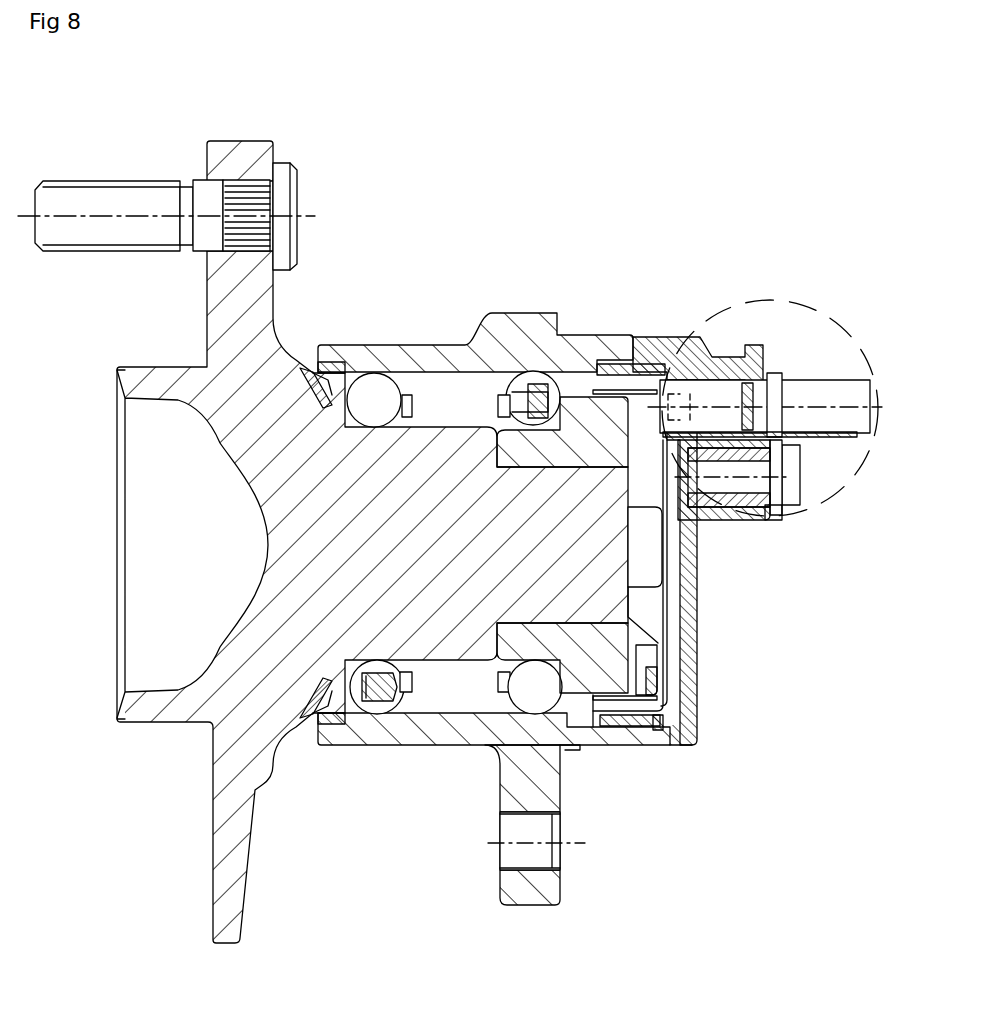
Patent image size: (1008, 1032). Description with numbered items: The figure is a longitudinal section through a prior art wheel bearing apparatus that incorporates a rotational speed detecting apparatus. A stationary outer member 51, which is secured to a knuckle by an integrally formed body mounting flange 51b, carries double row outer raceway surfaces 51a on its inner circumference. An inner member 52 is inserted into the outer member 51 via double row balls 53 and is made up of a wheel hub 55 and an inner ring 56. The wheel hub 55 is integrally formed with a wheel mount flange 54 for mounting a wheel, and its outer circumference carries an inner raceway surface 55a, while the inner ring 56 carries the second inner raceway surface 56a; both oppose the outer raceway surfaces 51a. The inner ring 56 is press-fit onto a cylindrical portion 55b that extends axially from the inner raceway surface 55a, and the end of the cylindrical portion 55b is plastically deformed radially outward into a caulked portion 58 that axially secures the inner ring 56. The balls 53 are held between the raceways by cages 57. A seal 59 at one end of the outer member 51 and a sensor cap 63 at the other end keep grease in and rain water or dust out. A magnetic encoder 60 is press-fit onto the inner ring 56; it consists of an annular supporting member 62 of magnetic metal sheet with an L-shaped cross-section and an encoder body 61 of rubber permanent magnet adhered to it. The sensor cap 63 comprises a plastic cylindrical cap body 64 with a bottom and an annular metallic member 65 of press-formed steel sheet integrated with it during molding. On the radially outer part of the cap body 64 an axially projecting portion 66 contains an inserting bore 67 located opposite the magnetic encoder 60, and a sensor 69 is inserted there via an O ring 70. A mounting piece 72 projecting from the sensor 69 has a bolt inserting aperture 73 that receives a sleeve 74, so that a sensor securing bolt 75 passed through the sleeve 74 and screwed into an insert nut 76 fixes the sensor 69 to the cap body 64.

The outer member 51 is at (457, 357).
The outer raceway surfaces 51a is at (378, 385).
The body mounting flange 51b is at (525, 893).
The inner member 52 is at (236, 467).
The double row balls 53 is at (527, 697).
The wheel mount flange 54 is at (243, 158).
The wheel hub 55 is at (238, 413).
The inner raceway surface 55a is at (367, 403).
The cylindrical portion 55b is at (577, 450).
The inner ring 56 is at (563, 657).
The inner raceway surface 56a is at (518, 410).
The cages 57 is at (395, 680).
The caulked portion 58 is at (675, 628).
The seal 59 is at (305, 716).
The magnetic encoder 60 is at (786, 680).
The encoder body 61 is at (660, 678).
The annular supporting member 62 is at (672, 717).
The sensor cap 63 is at (657, 272).
The cap body 64 is at (720, 372).
The annular metallic member 65 is at (650, 362).
The axially projecting portion 66 is at (757, 513).
The inserting bore 67 is at (750, 380).
The sensor 69 is at (818, 378).
The O ring 70 is at (800, 450).
The mounting piece 72 is at (777, 373).
The bolt inserting aperture 73 is at (775, 483).
The sleeve 74 is at (773, 516).
The sensor securing bolt 75 is at (797, 502).
The insert nut 76 is at (727, 513).